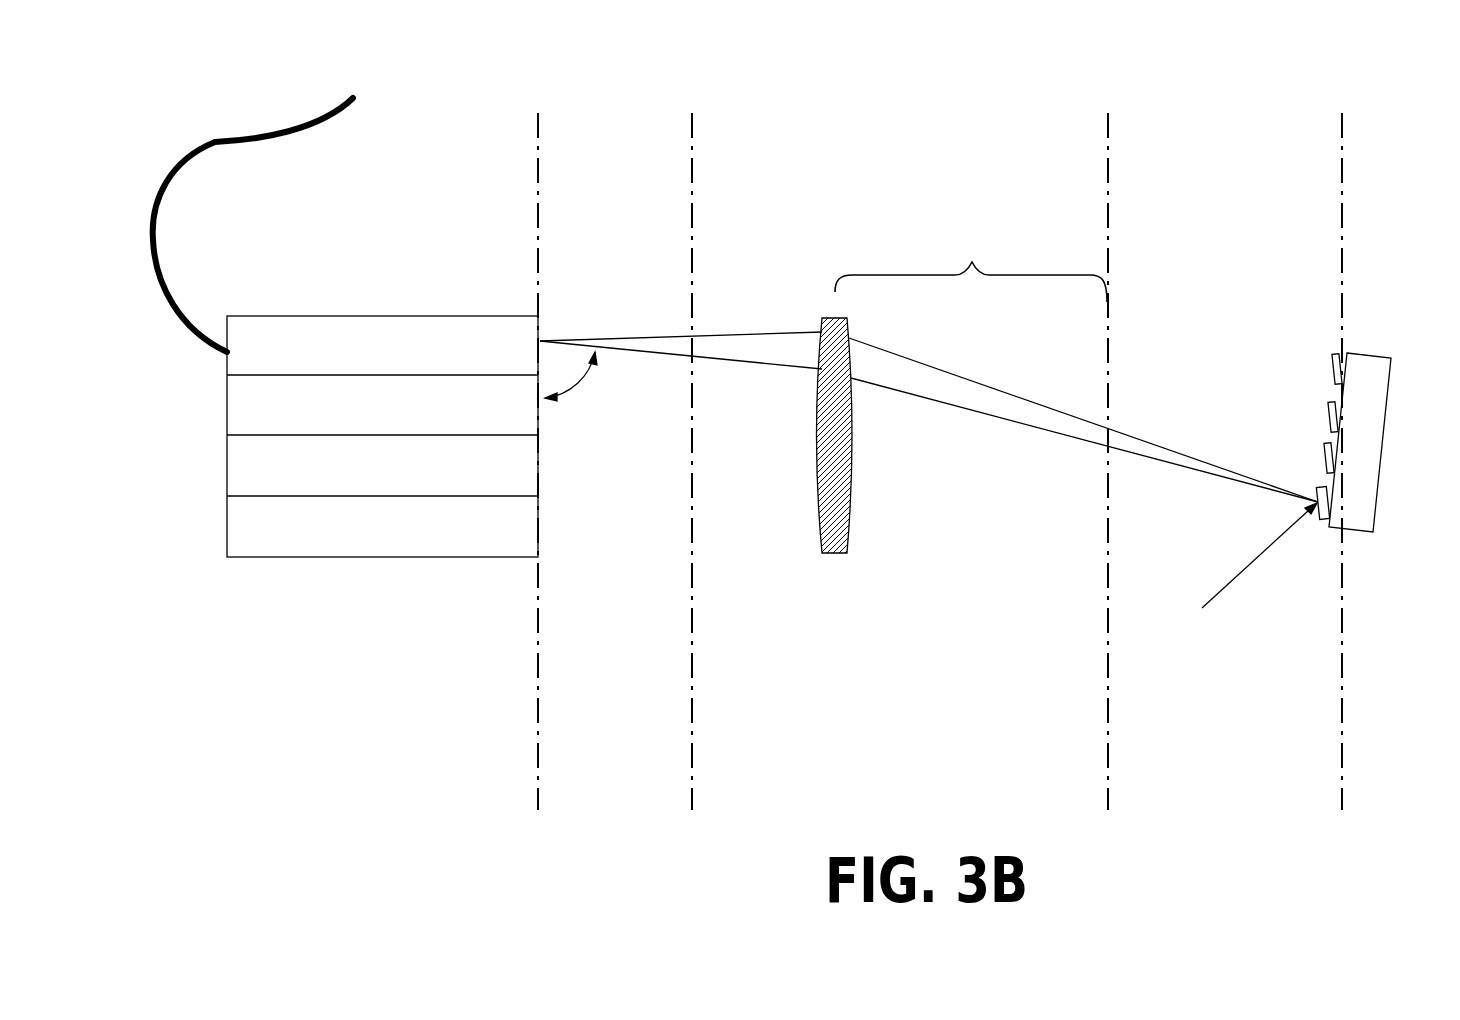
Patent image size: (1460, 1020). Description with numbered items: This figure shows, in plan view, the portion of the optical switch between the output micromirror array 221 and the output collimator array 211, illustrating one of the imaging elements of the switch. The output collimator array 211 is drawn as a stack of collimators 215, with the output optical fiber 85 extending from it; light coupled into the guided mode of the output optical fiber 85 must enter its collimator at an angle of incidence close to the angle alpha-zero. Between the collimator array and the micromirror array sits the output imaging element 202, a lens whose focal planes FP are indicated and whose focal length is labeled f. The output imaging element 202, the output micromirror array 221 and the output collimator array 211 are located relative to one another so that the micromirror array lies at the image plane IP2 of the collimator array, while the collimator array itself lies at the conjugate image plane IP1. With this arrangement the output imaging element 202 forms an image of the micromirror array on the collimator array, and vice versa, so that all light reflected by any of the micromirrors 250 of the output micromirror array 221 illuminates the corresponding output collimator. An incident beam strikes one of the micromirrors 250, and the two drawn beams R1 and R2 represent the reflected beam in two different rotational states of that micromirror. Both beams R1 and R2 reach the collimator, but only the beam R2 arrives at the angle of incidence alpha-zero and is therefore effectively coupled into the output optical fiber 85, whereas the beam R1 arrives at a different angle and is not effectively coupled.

The output optical fiber 85 is at (262, 140).
The output collimator array 211 is at (403, 553).
The input collimator 215 is at (354, 367).
The output imaging element 202 is at (835, 533).
The output micromirror array 221 is at (1360, 488).
The micromirrors 250 is at (1320, 490).
The light beam R1 is at (798, 333).
The light beam R2 is at (805, 368).
The first image plane IP1 is at (530, 700).
The image plane IP2 is at (1342, 698).
The focal plane FP is at (690, 738).
The focal length f is at (971, 263).